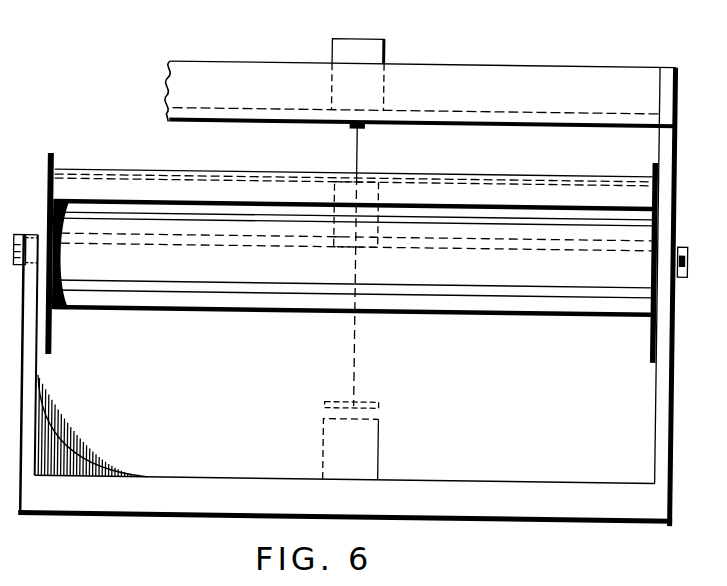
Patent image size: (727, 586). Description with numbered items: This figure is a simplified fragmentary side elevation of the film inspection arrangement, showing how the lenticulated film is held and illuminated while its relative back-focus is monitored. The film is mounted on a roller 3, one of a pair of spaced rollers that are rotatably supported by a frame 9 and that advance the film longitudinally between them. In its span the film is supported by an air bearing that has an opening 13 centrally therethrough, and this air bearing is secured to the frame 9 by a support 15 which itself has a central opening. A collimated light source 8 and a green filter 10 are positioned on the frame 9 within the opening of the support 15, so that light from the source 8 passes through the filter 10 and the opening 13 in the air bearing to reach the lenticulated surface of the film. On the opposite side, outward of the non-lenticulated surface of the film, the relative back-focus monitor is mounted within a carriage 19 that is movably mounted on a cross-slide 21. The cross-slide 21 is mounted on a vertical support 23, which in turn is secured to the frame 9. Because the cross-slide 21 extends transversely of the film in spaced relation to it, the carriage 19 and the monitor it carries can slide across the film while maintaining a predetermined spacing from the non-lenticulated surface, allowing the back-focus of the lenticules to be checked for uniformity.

The roller 3 is at (568, 276).
The collimated light source 8 is at (381, 456).
The frame 9 is at (424, 506).
The green filter 10 is at (358, 404).
The opening 13 is at (371, 193).
The support 15 is at (486, 375).
The carriage 19 is at (374, 38).
The cross-slide 21 is at (481, 84).
The vertical support 23 is at (666, 140).